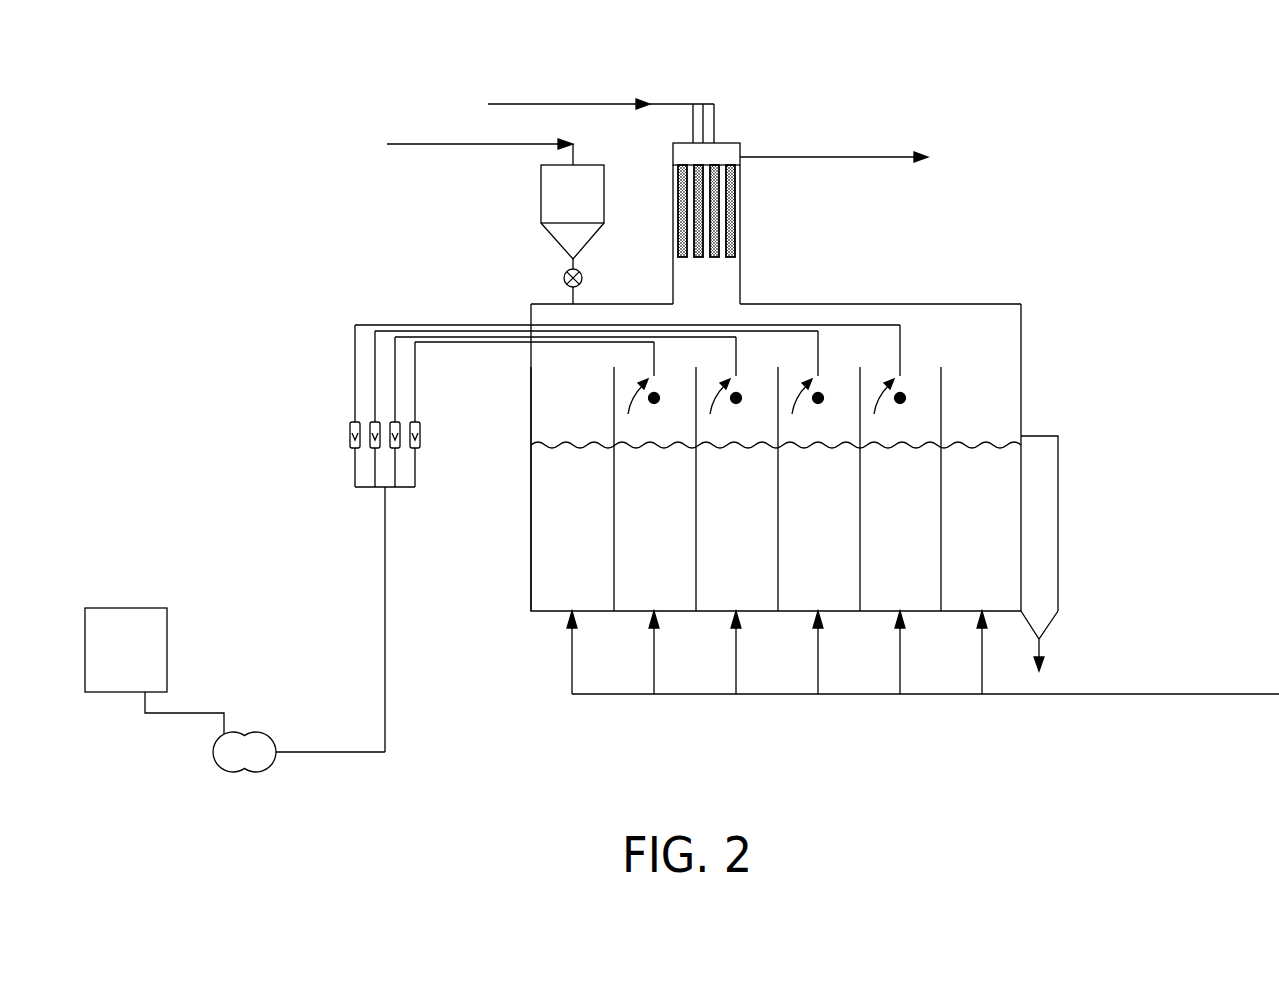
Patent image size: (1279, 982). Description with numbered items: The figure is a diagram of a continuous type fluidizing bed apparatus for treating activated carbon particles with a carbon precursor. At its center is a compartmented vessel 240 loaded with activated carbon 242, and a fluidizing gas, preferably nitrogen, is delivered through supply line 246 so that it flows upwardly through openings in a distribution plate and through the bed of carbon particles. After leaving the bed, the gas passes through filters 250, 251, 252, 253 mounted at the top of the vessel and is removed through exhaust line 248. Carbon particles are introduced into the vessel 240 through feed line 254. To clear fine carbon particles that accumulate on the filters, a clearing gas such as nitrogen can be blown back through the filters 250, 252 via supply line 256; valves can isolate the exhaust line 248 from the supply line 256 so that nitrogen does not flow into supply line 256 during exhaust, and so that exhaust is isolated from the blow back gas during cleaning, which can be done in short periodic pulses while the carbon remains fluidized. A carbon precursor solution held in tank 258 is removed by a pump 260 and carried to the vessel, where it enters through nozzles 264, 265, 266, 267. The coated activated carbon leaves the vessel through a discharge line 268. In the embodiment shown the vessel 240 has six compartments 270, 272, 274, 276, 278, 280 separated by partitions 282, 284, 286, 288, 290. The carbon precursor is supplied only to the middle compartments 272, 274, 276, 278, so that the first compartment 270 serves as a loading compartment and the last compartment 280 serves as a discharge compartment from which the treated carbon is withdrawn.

The compartmented vessel 240 is at (1040, 367).
The activated carbon 242 is at (534, 505).
The supply line 246 is at (1189, 695).
The exhaust line 248 is at (822, 157).
The filter 250 is at (706, 223).
The filter 251 is at (677, 245).
The filter 252 is at (714, 258).
The filter 253 is at (698, 258).
The feed line 254 is at (571, 296).
The supply line 256 is at (673, 104).
The tank 258 is at (167, 650).
The pump 260 is at (213, 752).
The nozzle 264 is at (641, 392).
The nozzle 265 is at (723, 390).
The nozzle 266 is at (805, 387).
The nozzle 267 is at (887, 384).
The discharge line 268 is at (1056, 553).
The first compartment 270 is at (591, 577).
The compartment 272 is at (674, 577).
The compartment 274 is at (756, 577).
The compartment 276 is at (838, 577).
The compartment 278 is at (919, 577).
The last compartment 280 is at (1003, 577).
The partition 282 is at (616, 505).
The partition 284 is at (698, 505).
The partition 286 is at (780, 505).
The partition 288 is at (862, 505).
The partition 290 is at (943, 505).